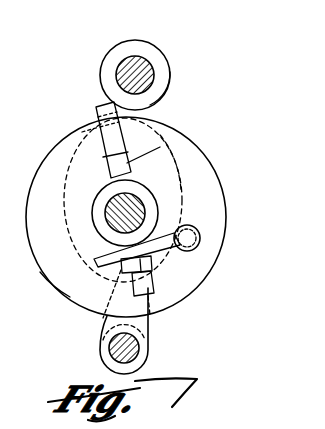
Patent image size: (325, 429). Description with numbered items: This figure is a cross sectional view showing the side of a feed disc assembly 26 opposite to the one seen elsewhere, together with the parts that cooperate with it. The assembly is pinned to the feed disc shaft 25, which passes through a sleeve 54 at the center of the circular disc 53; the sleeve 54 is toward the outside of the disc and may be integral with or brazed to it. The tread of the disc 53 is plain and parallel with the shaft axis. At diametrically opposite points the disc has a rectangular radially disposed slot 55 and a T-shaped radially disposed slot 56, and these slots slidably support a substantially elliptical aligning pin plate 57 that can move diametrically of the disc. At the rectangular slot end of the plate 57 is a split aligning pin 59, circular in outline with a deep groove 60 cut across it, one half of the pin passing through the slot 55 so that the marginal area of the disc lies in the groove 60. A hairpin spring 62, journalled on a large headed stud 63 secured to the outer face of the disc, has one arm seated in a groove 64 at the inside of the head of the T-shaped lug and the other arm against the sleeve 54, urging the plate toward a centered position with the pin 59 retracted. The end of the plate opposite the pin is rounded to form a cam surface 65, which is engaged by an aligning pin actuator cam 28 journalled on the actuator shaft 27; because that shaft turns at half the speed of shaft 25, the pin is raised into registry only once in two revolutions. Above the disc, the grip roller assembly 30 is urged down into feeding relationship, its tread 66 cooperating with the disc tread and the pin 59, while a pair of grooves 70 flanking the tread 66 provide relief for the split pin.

The feed disc shaft 25 is at (106, 208).
The feed disc assembly 26 is at (55, 286).
The actuator shaft 27 is at (138, 356).
The aligning pin actuator cam 28 is at (150, 322).
The grip roller assembly 30 is at (104, 61).
The circular disc 53 is at (212, 152).
The sleeve 54 is at (152, 204).
The rectangular radially disposed slot 55 is at (153, 147).
The T-shaped radially disposed slot 56 is at (158, 283).
The aligning pin plate 57 is at (69, 231).
The split aligning pin 59 is at (96, 111).
The groove 60 is at (106, 162).
The hairpin spring 62 is at (168, 226).
The large headed stud 63 is at (199, 231).
The groove 64 is at (116, 278).
The cam surface 65 is at (154, 297).
The tread 66 is at (170, 81).
The groove 70 is at (140, 56).